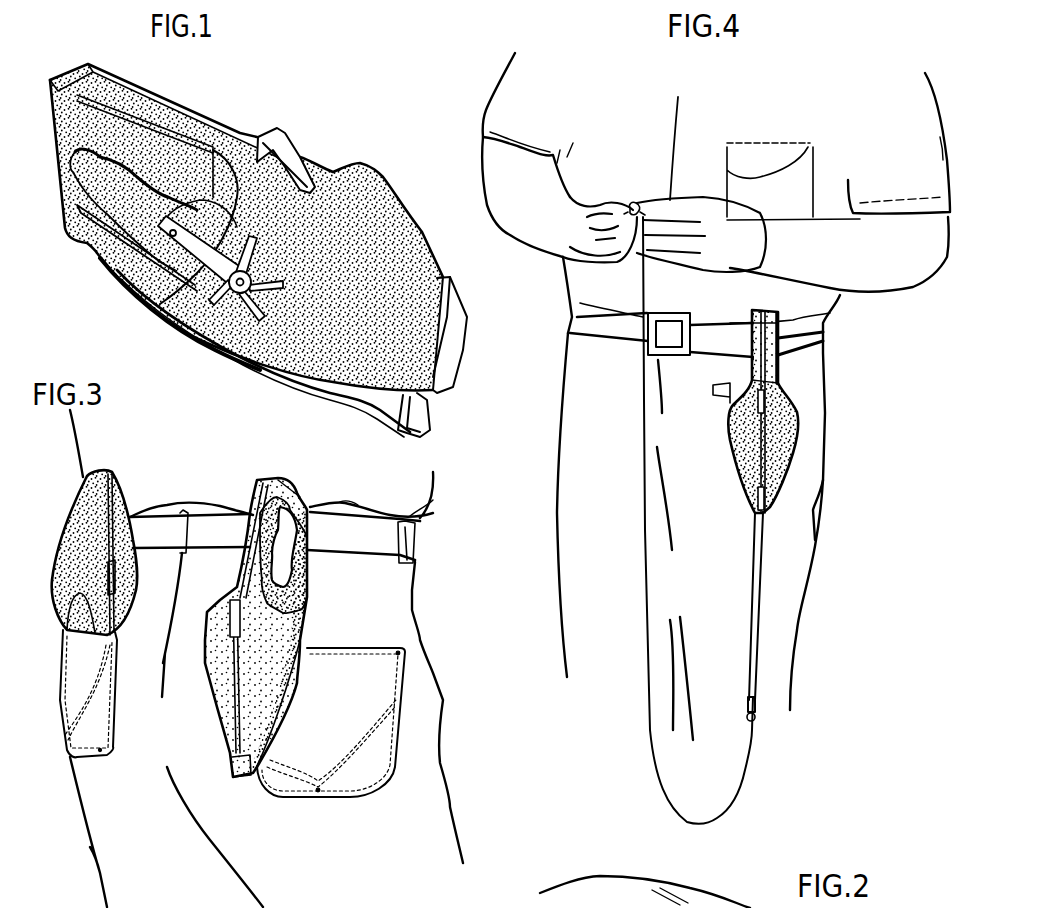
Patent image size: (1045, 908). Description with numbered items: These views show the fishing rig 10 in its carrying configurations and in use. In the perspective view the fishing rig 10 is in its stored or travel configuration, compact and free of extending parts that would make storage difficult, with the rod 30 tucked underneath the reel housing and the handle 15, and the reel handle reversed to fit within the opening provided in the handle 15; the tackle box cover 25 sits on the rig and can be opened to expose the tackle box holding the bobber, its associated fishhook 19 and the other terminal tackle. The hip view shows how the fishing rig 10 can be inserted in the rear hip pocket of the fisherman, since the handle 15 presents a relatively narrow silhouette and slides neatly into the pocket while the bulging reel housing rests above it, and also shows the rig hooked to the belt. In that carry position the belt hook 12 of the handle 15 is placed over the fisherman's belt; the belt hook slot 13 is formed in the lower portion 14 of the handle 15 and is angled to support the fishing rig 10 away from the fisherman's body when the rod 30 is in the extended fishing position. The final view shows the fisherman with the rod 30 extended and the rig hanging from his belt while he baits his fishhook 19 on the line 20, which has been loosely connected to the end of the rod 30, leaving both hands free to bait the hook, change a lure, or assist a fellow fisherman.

In FIG. 1, the fishing rig 10 is at (356, 145).
In FIG. 3, the fishing rig 10 is at (128, 500).
In FIG. 4, the fishing rig 10 is at (800, 445).
In FIG. 3, the belt hook 12 is at (313, 498).
In FIG. 4, the belt hook 12 is at (750, 312).
In FIG. 1, the belt hook slot 13 is at (80, 237).
In FIG. 3, the belt hook slot 13 is at (308, 527).
In FIG. 1, the lower portion 14 is at (113, 283).
In FIG. 3, the lower portion 14 is at (302, 587).
In FIG. 1, the handle 15 is at (177, 96).
In FIG. 3, the handle 15 is at (292, 482).
In FIG. 4, the handle 15 is at (785, 363).
In FIG. 4, the fishhook 19 is at (634, 205).
In FIG. 4, the line 20 is at (640, 405).
In FIG. 1, the tackle box cover 25 is at (221, 128).
In FIG. 1, the rod 30 is at (238, 361).
In FIG. 4, the rod 30 is at (753, 597).